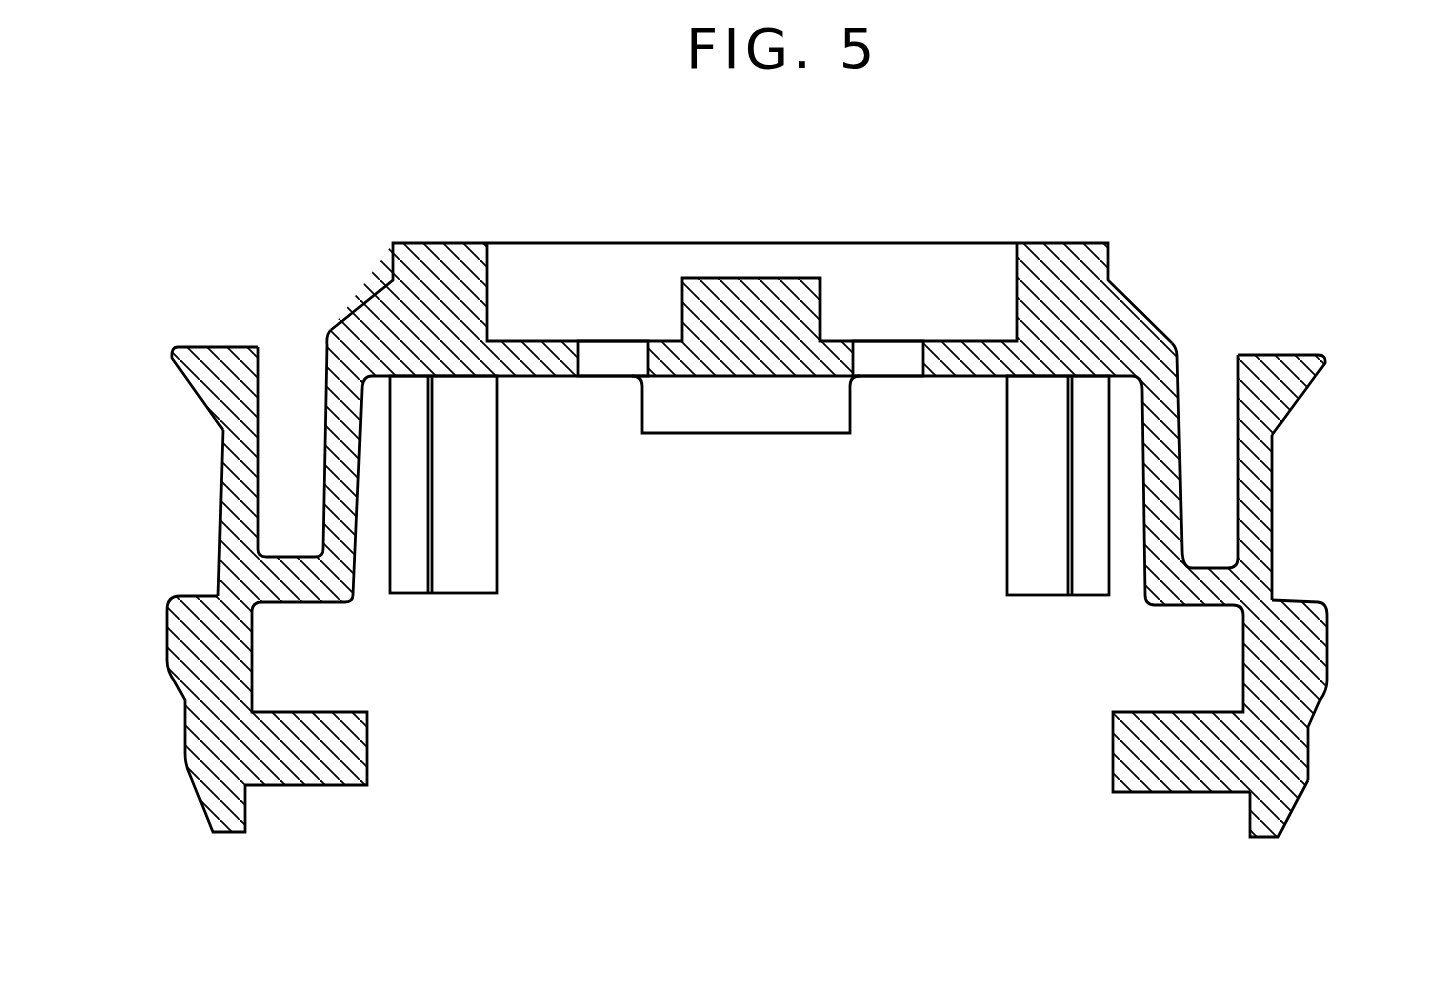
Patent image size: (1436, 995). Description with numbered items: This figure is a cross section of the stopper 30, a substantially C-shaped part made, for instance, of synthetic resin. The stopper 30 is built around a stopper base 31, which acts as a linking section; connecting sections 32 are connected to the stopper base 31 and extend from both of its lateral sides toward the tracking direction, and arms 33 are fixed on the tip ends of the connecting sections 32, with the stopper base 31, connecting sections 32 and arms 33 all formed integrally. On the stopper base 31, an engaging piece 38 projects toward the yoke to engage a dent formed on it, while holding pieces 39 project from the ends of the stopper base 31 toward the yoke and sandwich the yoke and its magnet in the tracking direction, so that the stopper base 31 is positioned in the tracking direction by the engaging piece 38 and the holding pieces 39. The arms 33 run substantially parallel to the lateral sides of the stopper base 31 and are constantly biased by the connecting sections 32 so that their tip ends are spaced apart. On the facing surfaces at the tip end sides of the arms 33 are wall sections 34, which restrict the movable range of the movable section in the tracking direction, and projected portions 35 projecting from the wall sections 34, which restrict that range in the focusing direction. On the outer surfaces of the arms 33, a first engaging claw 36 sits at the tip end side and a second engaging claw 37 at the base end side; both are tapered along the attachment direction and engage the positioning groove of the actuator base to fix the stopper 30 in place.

The stopper 30 is at (1030, 183).
The stopper base 31 is at (487, 290).
The connecting sections 32 is at (343, 337).
The arms 33 is at (258, 405).
The wall sections 34 is at (240, 818).
The projected portions 35 is at (353, 753).
The first engaging claw 36 is at (185, 755).
The second engaging claw 37 is at (190, 366).
The engaging piece 38 is at (747, 427).
The holding pieces 39 is at (460, 575).